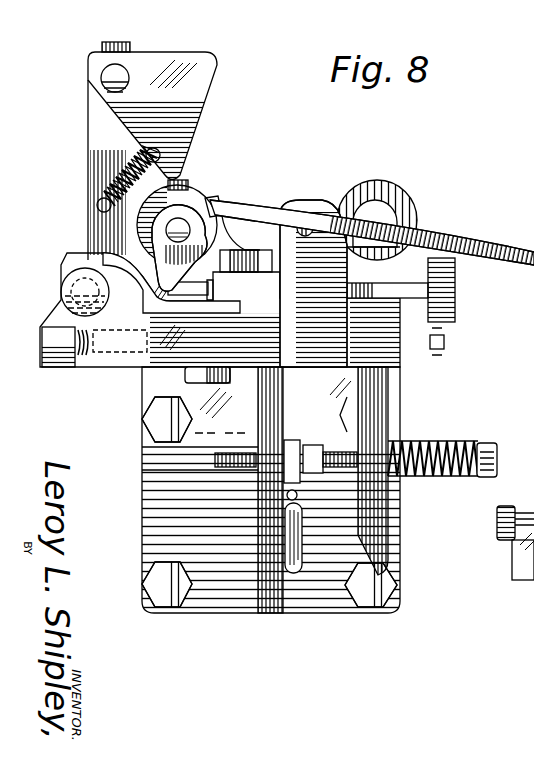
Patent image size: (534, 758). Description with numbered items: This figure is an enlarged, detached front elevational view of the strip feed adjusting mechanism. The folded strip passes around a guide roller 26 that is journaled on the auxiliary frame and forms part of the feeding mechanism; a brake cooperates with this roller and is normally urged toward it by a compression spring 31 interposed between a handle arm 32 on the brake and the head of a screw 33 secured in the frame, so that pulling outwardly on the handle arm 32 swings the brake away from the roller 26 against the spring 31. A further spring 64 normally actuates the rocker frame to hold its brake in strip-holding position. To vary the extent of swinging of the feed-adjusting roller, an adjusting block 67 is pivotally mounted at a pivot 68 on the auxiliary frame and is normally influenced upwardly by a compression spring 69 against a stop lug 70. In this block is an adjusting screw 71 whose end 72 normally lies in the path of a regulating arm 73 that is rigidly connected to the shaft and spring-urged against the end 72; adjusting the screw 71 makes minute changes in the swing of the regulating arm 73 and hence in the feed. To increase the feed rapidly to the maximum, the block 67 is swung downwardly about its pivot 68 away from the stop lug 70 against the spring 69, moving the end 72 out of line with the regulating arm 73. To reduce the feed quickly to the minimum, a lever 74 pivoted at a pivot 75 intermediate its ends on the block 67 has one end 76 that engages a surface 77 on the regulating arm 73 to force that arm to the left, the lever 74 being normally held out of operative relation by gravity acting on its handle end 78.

The guide roller 26 is at (392, 183).
The compression spring 31 is at (450, 441).
The handle arm 32 is at (377, 512).
The screw 33 is at (487, 443).
The spring 64 is at (123, 183).
The adjusting block 67 is at (170, 350).
The pivot 68 is at (62, 293).
The compression spring 69 is at (83, 367).
The stop lug 70 is at (243, 250).
The adjusting screw 71 is at (342, 345).
The end of adjusting screw 72 is at (147, 290).
The regulating arm 73 is at (160, 270).
The lever 74 is at (335, 220).
The pivot 75 is at (305, 220).
The end of lever 76 is at (221, 205).
The surface 77 is at (207, 203).
The handle end 78 is at (447, 235).